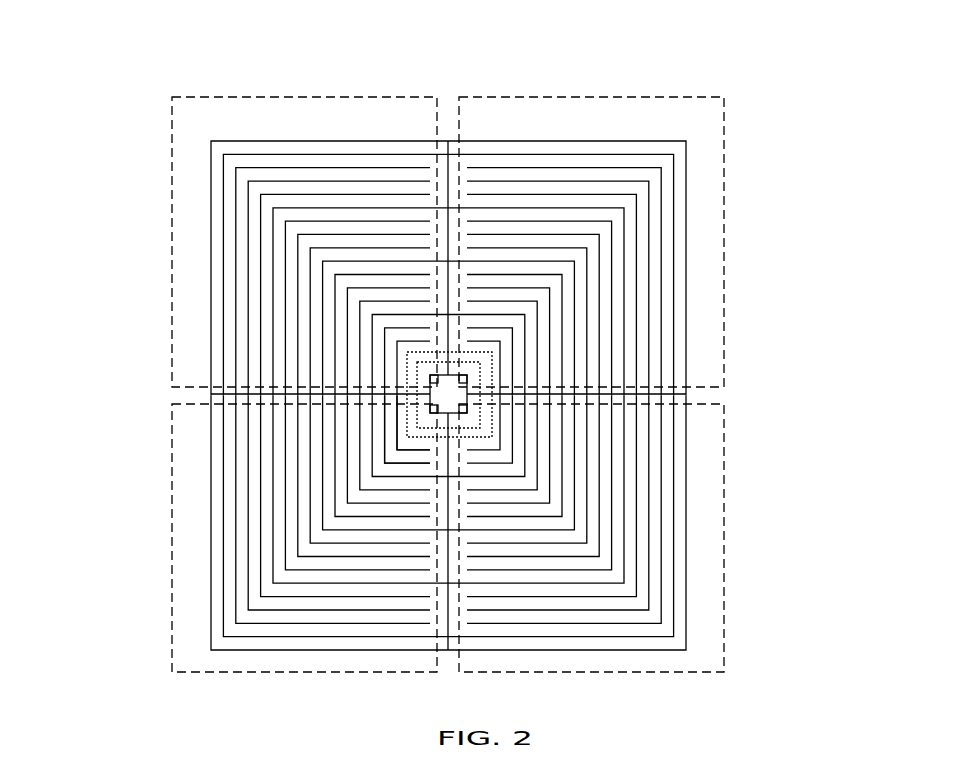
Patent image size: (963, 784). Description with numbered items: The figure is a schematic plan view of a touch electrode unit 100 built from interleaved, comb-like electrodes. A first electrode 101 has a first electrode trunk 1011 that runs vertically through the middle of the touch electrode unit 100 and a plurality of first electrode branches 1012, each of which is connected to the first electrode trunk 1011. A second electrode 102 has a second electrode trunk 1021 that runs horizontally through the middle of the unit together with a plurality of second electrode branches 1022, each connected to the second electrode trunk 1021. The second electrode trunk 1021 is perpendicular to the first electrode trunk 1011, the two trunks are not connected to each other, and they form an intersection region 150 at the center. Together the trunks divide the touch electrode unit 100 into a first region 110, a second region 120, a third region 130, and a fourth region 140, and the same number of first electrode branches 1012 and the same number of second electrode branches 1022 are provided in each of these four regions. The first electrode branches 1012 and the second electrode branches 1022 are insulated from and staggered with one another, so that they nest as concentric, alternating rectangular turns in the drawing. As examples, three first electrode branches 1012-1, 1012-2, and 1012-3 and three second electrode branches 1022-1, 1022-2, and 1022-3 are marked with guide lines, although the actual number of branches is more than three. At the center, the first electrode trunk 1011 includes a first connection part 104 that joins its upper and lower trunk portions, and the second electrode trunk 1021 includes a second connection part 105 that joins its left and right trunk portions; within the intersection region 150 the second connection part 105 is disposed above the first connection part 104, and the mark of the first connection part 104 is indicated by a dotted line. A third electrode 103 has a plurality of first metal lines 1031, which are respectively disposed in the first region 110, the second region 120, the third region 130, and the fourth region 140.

The touch electrode unit 100 is at (382, 62).
The first region 110 is at (226, 96).
The second region 120 is at (569, 98).
The third region 130 is at (184, 629).
The fourth region 140 is at (708, 592).
The first electrode 101 is at (569, 249).
The first electrode trunk 1011 is at (448, 287).
The first electrode branches 1012 is at (542, 249).
The first electrode branch 1012-1 is at (505, 154).
The first electrode branch 1012-2 is at (515, 208).
The first electrode branch 1012-3 is at (523, 261).
The second electrode 102 is at (565, 504).
The second electrode trunk 1021 is at (500, 394).
The second electrode branches 1022 is at (538, 523).
The second electrode branch 1022-1 is at (500, 449).
The second electrode branch 1022-2 is at (548, 483).
The second electrode branch 1022-3 is at (598, 525).
The third electrode 103 is at (221, 484).
The first metal line 1031 is at (392, 457).
The first connection part 104 is at (418, 397).
The second connection part 105 is at (443, 416).
The intersection region 150 is at (397, 377).